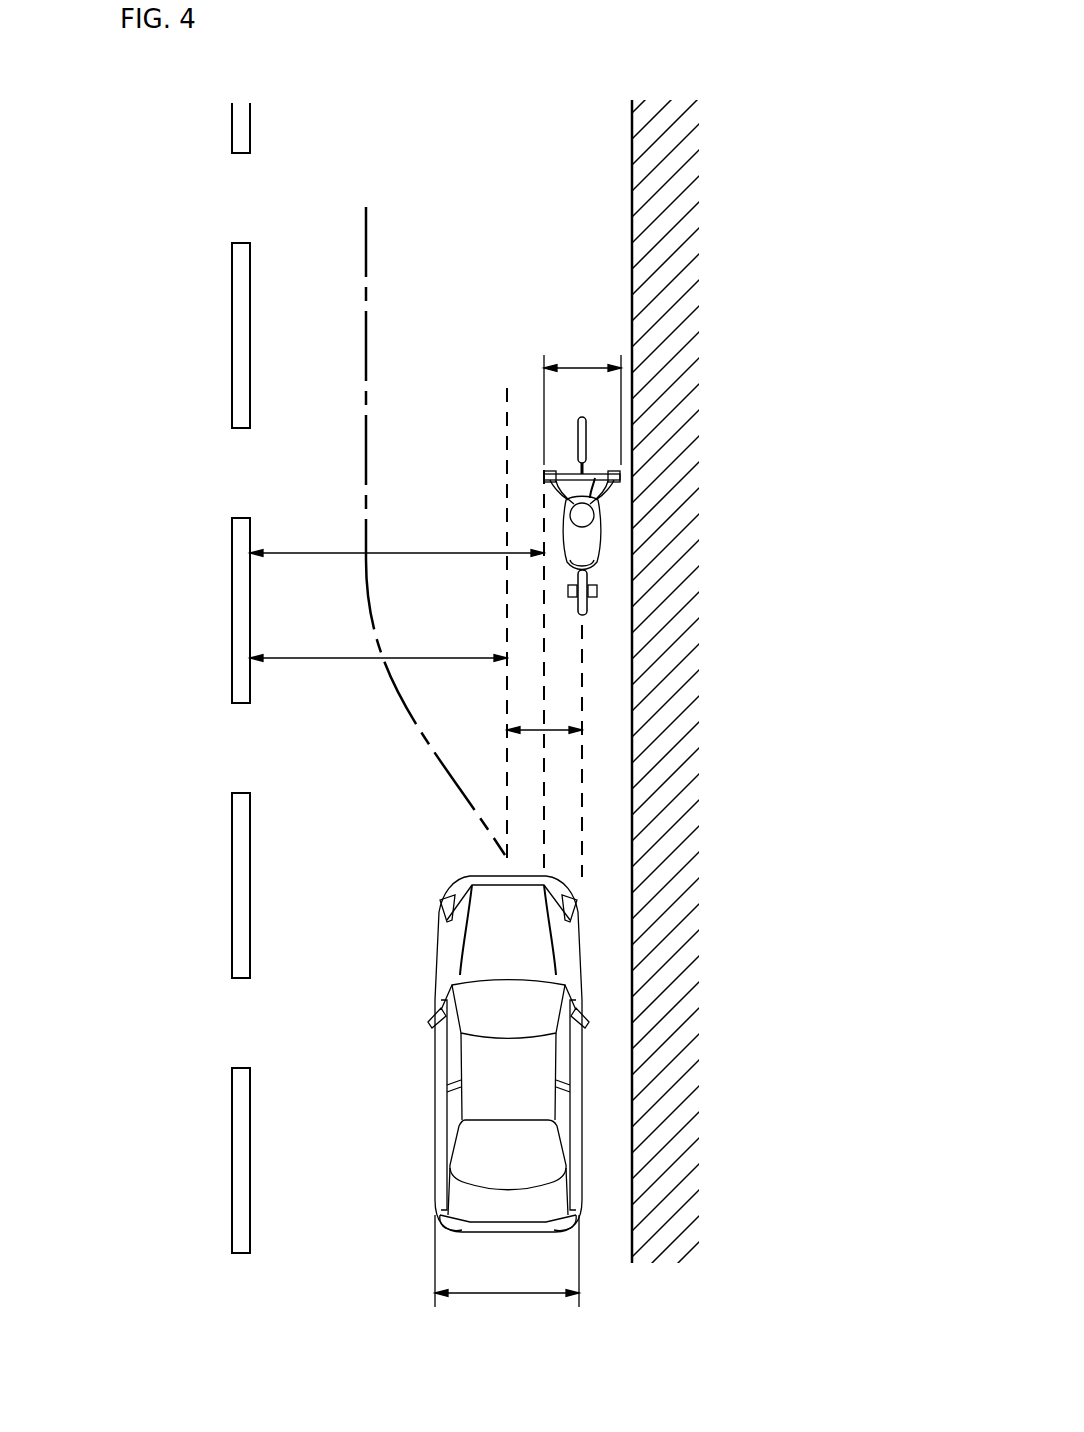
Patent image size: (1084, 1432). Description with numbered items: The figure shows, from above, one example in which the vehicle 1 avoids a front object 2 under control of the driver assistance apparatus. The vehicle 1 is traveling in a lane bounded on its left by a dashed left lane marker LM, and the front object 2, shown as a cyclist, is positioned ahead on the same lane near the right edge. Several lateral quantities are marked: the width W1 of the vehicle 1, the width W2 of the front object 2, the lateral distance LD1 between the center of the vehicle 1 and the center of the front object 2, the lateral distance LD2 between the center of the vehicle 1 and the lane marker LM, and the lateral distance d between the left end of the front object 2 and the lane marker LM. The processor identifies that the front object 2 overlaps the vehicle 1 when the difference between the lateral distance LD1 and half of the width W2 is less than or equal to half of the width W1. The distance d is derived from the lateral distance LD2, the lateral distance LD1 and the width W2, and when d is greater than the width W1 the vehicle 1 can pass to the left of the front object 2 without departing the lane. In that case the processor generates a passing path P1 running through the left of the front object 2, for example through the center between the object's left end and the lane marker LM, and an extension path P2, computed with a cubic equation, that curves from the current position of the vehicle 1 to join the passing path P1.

The vehicle 1 is at (565, 1058).
The front object 2 is at (605, 513).
The left lane marker LM is at (232, 887).
The passing path P1 is at (366, 393).
The extension path P2 is at (431, 740).
The lateral distance between left end of front object and left lane marker d is at (397, 541).
The lateral distance between center of vehicle and center of front object LD1 is at (530, 730).
The lateral distance between center of vehicle and lane marker LD2 is at (378, 675).
The width of the vehicle W1 is at (507, 1271).
The width of the front object W2 is at (582, 399).